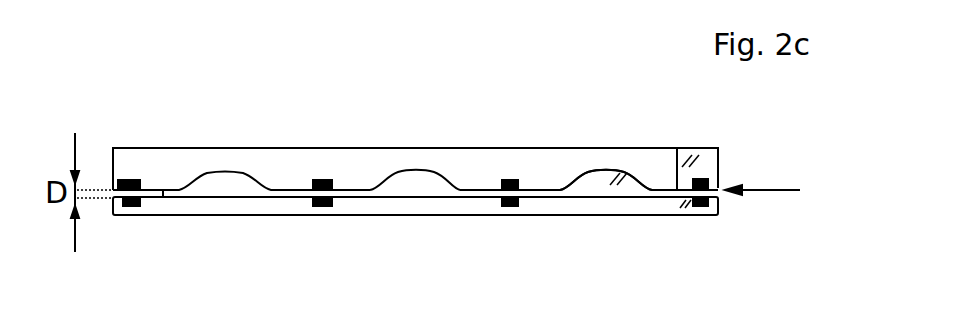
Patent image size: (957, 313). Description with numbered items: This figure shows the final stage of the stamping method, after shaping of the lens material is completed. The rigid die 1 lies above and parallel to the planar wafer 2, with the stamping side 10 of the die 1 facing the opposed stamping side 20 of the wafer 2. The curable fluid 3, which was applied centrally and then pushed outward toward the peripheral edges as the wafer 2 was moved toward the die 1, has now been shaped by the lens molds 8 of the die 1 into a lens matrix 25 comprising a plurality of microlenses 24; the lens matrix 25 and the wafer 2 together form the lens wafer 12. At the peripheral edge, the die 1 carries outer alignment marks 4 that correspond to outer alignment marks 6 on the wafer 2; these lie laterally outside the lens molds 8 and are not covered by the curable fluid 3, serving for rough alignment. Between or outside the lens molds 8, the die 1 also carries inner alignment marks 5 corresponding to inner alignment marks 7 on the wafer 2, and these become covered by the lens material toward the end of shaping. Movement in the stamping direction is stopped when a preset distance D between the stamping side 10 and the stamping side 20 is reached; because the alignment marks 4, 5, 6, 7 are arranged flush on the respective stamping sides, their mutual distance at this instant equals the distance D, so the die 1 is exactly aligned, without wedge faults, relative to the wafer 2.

The die 1 is at (412, 160).
The wafer 2 is at (417, 206).
The curable fluid 3 is at (440, 186).
The outer alignment marks 4 is at (120, 180).
The inner alignment marks 5 is at (320, 180).
The outer corresponding alignment marks 6 is at (130, 205).
The inner alignment marks 7 is at (320, 206).
The lens molds 8 is at (604, 170).
The stamping side 10 is at (677, 148).
The stamping side 20 is at (158, 190).
The lens wafer 12 is at (781, 187).
The microlenses 24 is at (597, 185).
The lens matrix 25 is at (658, 190).